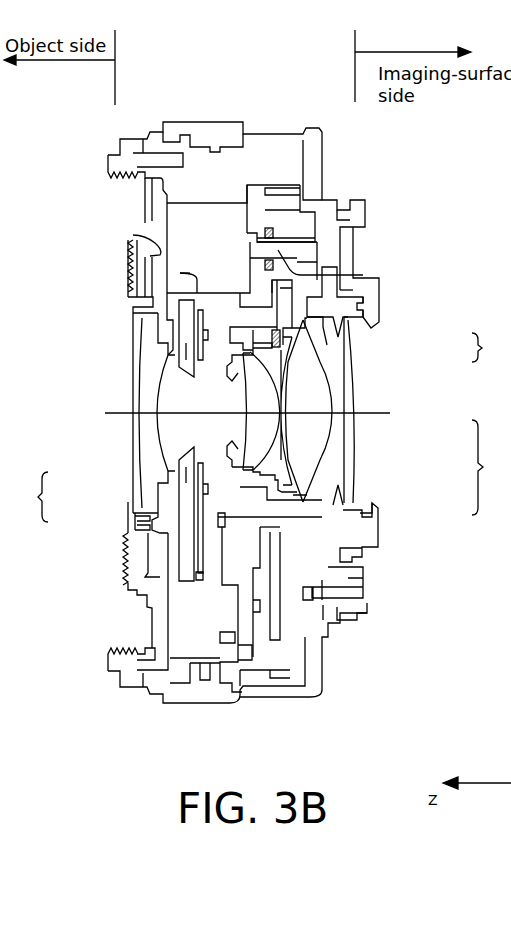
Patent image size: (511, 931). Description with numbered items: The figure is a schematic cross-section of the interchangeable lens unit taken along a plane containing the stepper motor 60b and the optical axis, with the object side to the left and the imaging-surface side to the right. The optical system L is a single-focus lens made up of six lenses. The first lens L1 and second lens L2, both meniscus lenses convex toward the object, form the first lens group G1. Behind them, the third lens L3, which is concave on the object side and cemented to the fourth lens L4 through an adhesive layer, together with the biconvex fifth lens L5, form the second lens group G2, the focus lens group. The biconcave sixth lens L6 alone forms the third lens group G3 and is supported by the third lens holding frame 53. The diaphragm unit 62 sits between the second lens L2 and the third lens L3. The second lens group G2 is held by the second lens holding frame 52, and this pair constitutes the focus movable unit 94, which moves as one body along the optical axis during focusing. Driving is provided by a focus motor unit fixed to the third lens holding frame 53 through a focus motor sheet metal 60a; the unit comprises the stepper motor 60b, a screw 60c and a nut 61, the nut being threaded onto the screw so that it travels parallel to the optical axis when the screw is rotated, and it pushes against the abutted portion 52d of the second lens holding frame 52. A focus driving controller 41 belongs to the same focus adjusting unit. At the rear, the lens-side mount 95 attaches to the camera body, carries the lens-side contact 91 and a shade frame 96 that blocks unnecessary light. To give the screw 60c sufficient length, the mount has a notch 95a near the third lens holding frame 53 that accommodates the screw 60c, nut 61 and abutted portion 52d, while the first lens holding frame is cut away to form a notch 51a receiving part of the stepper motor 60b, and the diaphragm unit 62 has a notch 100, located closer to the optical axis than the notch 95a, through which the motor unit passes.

The stepper motor 60b is at (192, 228).
The focus motor sheet metal 60a is at (243, 197).
The third lens holding frame 53 is at (297, 190).
The nut 61 is at (333, 193).
The lens-side mount 95 is at (317, 233).
The notch 95a is at (303, 266).
The abutted portion 52d is at (290, 266).
The screw 60c is at (363, 275).
The shade frame 96 is at (372, 309).
The sixth lens L6 is at (353, 360).
The third lens group G3 is at (491, 347).
The fifth lens L5 is at (313, 392).
The fourth lens L4 is at (280, 440).
The third lens L3 is at (262, 458).
The second lens group G2 is at (491, 467).
The second lens holding frame 52 is at (285, 499).
The lens-side contact 91 is at (360, 586).
The focus driving controller 41 is at (275, 633).
The diaphragm unit 62 is at (188, 575).
The focus movable unit 94 is at (230, 498).
The first lens L1 is at (140, 470).
The second lens L2 is at (170, 423).
The first lens group G1 is at (30, 497).
The notch 100 is at (180, 273).
The notch 51a is at (162, 248).
The optical system L is at (120, 385).